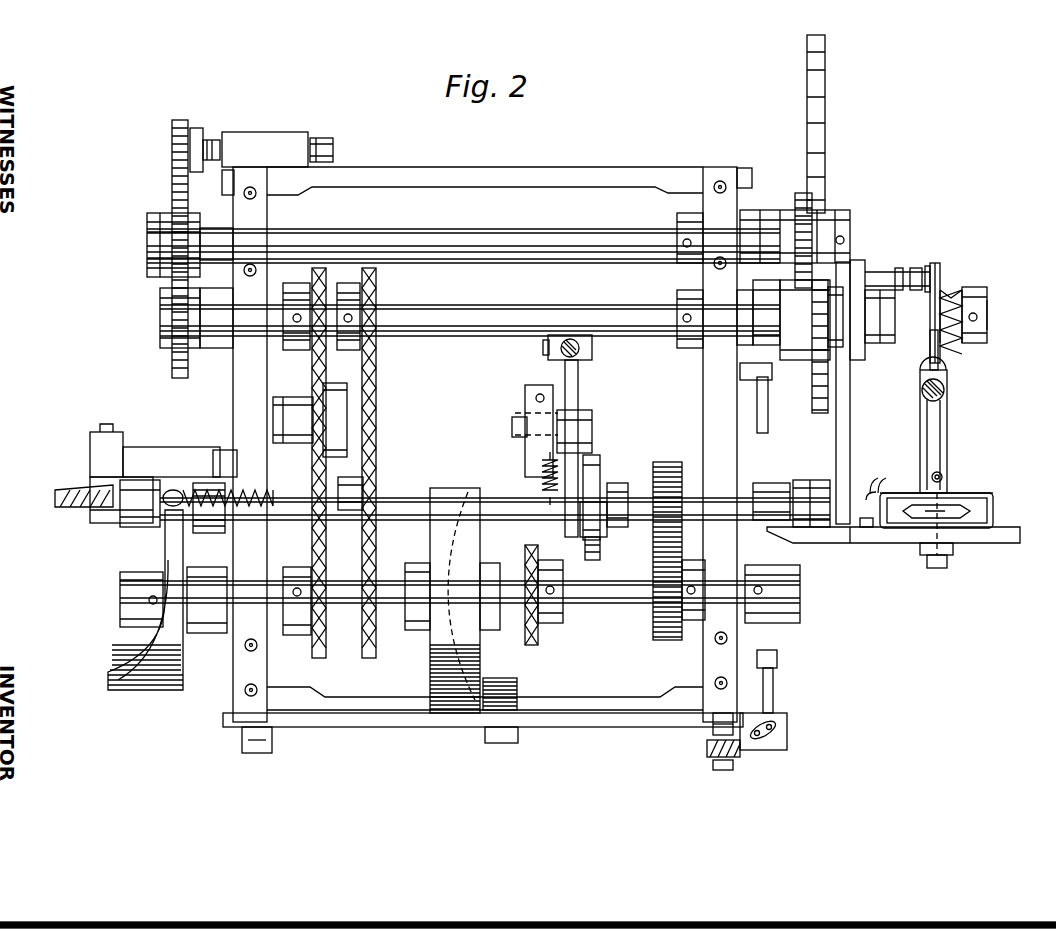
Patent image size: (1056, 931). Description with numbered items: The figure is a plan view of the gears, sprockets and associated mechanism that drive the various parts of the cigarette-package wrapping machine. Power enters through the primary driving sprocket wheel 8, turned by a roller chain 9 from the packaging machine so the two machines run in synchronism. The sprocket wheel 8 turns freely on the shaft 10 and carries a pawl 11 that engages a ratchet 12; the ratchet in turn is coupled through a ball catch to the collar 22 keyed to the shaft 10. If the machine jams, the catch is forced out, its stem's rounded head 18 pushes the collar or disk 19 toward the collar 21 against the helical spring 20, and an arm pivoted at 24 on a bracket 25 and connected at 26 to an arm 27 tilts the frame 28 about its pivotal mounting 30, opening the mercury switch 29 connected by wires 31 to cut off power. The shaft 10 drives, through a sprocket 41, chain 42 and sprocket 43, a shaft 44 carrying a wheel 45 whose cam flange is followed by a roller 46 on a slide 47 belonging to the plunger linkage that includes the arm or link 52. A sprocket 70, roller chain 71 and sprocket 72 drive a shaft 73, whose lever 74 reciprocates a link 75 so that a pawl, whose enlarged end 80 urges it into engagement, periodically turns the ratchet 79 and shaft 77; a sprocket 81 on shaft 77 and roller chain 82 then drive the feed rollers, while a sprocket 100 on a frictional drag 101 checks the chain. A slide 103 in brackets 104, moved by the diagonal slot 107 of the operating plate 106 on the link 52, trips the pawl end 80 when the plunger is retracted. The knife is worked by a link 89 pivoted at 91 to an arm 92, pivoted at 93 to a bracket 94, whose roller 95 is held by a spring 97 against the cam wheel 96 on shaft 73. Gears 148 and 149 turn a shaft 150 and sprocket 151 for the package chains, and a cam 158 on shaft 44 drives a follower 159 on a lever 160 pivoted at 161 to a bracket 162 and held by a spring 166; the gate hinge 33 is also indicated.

The primary driving sprocket wheel 8 is at (830, 396).
The roller chain 9 is at (825, 123).
The shaft 10 is at (490, 308).
The pawl 11 is at (833, 377).
The ratchet 12 is at (896, 347).
The rounded head 18 is at (925, 266).
The collar or disk 19 is at (941, 275).
The helical spring 20 is at (952, 290).
The collar 21 is at (980, 291).
The collar 22 is at (860, 262).
The pivot 24 is at (946, 388).
The bracket 25 is at (946, 455).
The pivotal connection 26 is at (943, 476).
The arm 27 is at (960, 493).
The frame 28 is at (993, 500).
The mercury switch 29 is at (965, 518).
The pivotal mounting 30 is at (935, 545).
The wires 31 is at (880, 480).
The hinge 33 is at (948, 432).
The sprocket 41 is at (292, 293).
The chain 42 is at (312, 360).
The sprocket 43 is at (308, 640).
The shaft 44 is at (390, 612).
The wheel 45 is at (440, 665).
The follower or roller 46 is at (530, 690).
The slide 47 is at (613, 728).
The arm or link 52 is at (740, 752).
The sprocket 70 is at (348, 292).
The roller chain 71 is at (376, 385).
The sprocket 72 is at (378, 485).
The shaft 73 is at (407, 502).
The lever 74 is at (815, 528).
The link 75 is at (860, 406).
The shaft 77 is at (596, 238).
The ratchet 79 is at (800, 193).
The enlarged end 80 is at (768, 317).
The sprocket 81 is at (160, 238).
The roller chain 82 is at (172, 182).
The link 89 is at (594, 352).
The pivot 91 is at (548, 350).
The arm 92 is at (578, 378).
The pivot 93 is at (595, 437).
The bracket 94 is at (530, 415).
The follower or roller 95 is at (598, 533).
The cam wheel 96 is at (600, 456).
The spring 97 is at (542, 480).
The sprocket 100 is at (196, 128).
The frictional drag 101 is at (262, 140).
The slide 103 is at (768, 407).
The brackets 104 is at (741, 370).
The operating plate 106 is at (787, 738).
The diagonal slot 107 is at (778, 725).
The gear 148 is at (607, 520).
The gear 149 is at (653, 618).
The shaft 150 is at (600, 590).
The sprocket 151 is at (523, 630).
The cam 158 is at (160, 690).
The follower or roller 159 is at (142, 513).
The lever 160 is at (70, 490).
The pivot 161 is at (102, 518).
The bracket 162 is at (168, 440).
The spring 166 is at (185, 488).